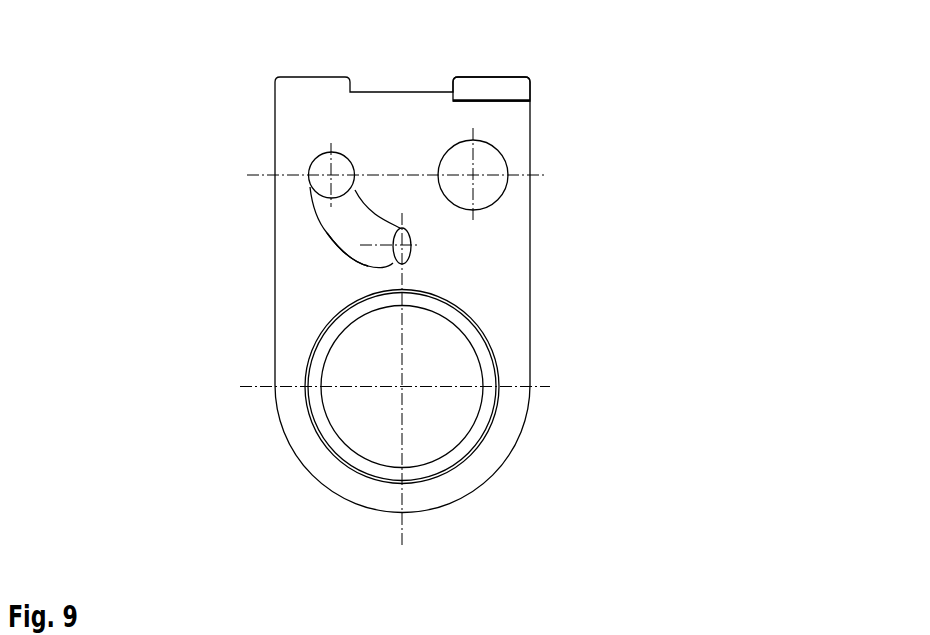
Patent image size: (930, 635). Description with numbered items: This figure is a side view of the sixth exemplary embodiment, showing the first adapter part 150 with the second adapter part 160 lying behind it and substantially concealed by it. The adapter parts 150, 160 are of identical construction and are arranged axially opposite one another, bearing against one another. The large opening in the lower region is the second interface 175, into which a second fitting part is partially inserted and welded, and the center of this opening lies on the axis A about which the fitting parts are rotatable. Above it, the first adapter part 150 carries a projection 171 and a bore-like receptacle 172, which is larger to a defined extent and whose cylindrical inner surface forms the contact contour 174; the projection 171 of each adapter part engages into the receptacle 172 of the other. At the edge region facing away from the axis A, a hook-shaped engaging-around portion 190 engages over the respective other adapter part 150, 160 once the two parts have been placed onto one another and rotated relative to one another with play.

The first adapter part 150 is at (488, 267).
The hook-shaped engaging-around portion 190 is at (483, 88).
The projection 171 is at (322, 168).
The second adapter part 160 is at (338, 222).
The bore-like receptacle 172 is at (347, 237).
The contact contour 174 is at (408, 250).
The second interface 175 is at (358, 417).
The axis A is at (403, 389).